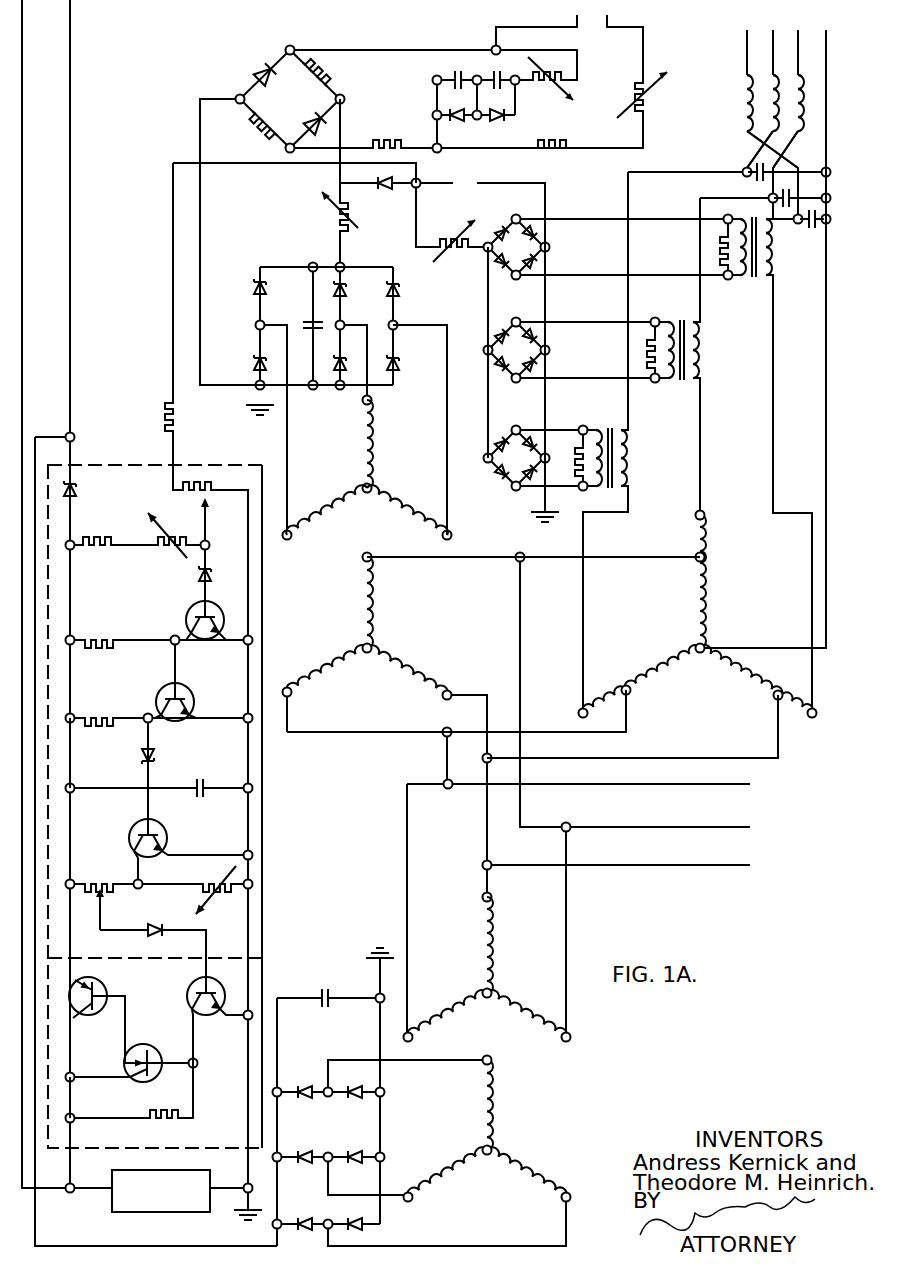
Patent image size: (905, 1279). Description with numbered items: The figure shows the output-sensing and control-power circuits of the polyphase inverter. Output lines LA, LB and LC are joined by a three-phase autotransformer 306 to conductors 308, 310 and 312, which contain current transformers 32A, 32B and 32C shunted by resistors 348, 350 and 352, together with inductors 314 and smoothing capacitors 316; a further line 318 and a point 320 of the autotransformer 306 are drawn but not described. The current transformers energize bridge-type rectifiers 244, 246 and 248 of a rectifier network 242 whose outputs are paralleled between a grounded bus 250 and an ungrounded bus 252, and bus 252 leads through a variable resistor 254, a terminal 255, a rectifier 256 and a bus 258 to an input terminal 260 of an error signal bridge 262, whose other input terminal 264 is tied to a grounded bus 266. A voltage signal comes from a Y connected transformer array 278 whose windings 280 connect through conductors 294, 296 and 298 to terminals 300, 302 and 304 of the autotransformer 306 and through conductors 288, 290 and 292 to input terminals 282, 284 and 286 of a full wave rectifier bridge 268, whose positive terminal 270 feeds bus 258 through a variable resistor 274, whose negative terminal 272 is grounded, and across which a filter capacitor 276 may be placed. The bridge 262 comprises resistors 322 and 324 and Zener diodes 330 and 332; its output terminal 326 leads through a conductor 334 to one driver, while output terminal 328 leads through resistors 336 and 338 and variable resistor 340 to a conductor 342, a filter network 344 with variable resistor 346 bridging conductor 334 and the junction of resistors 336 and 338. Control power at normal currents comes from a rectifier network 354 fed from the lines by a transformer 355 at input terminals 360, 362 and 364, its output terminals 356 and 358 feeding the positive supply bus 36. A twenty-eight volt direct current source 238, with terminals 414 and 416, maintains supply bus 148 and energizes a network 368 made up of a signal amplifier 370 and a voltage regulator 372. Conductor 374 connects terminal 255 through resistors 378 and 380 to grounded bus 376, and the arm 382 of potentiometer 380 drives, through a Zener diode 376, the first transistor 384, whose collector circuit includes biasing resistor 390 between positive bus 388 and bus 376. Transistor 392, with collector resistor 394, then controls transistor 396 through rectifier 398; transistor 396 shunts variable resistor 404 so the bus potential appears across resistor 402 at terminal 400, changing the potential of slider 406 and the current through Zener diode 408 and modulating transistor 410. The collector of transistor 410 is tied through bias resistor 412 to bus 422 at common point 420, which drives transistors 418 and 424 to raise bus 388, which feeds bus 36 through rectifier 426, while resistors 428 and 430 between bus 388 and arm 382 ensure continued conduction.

The potential supply bus 148 is at (44, 150).
The positive potential supply bus 36 is at (93, 150).
The error signal bridge 262 is at (307, 106).
The Zener diode 330 is at (276, 68).
The Zener diode 332 is at (330, 128).
The resistor 322 is at (313, 76).
The resistor 324 is at (256, 127).
The output terminal 326 is at (290, 50).
The input terminal 264 is at (239, 97).
The output terminal 328 is at (285, 150).
The input terminal 260 is at (342, 98).
The bus 258 is at (342, 108).
The grounded bus 266 is at (200, 126).
The fixed resistor 336 is at (392, 142).
The conductor 334 is at (492, 50).
The filter network 344 is at (437, 81).
The variable resistor 346 is at (535, 103).
The fixed resistor 338 is at (548, 142).
The conductor 342 is at (642, 58).
The variable resistor 340 is at (648, 108).
The output conductor 308 is at (747, 43).
The output conductor 310 is at (773, 43).
The output conductor 312 is at (798, 43).
The neutral line 318 is at (826, 43).
The inductors 314 is at (752, 150).
The smoothing capacitors 316 is at (755, 180).
The terminal 255 is at (418, 182).
The rectifier 256 is at (385, 190).
The variable resistor 254 is at (437, 236).
The bridge-type rectifier 248 is at (522, 212).
The bridge-type rectifier 246 is at (522, 316).
The bridge-type rectifier 244 is at (506, 428).
The rectifier network 242 is at (591, 196).
The ungrounded bus 252 is at (486, 298).
The grounded bus 250 is at (548, 298).
The resistor 352 is at (713, 247).
The current transformer 32C is at (757, 288).
The resistor 350 is at (647, 322).
The current transformer 32B is at (688, 395).
The resistor 348 is at (583, 430).
The current transformer 32A is at (610, 493).
The full wave rectifier bridge 268 is at (292, 224).
The positive potential output terminal 270 is at (336, 262).
The variable resistor 274 is at (348, 235).
The input terminal 282 is at (257, 322).
The negative potential output terminal 272 is at (258, 382).
The filter capacitor 276 is at (310, 324).
The input terminal 284 is at (343, 322).
The input terminal 286 is at (396, 320).
The conductor 290 is at (373, 398).
The conductor 374 is at (173, 258).
The resistor 378 is at (163, 412).
The network 368 is at (133, 465).
The signal amplifier 370 is at (262, 838).
The voltage regulator 372 is at (262, 990).
The three-phase Y connected transformer array 278 is at (337, 564).
The conductor 288 is at (290, 468).
The conductor 292 is at (447, 465).
The secondary windings 280 is at (386, 640).
The conductor 296 is at (436, 566).
The conductor 294 is at (340, 738).
The conductor 298 is at (622, 761).
The three-phase autotransformer 306 is at (768, 599).
The terminal 302 is at (706, 557).
The neutral point 320 is at (704, 648).
The terminal 300 is at (624, 689).
The terminal 304 is at (773, 697).
The potentiometer 380 is at (189, 493).
The arm 382 is at (226, 536).
The rectifier 426 is at (78, 498).
The resistor 430 is at (117, 532).
The resistor 428 is at (180, 554).
The grounded bus 376 is at (191, 579).
The first transistor 384 is at (187, 612).
The biasing resistor 390 is at (110, 628).
The amplifying transistor 392 is at (165, 686).
The resistor 394 is at (95, 695).
The rectifier 398 is at (151, 752).
The positive potential bus 388 is at (72, 768).
The amplifying transistor 396 is at (168, 840).
The resistance 402 is at (95, 876).
The terminal 400 is at (142, 882).
The slider 406 is at (104, 905).
The variable resistor 404 is at (224, 900).
The Zener diode 408 is at (145, 933).
The transistor 424 is at (104, 990).
The modulating transistor 410 is at (187, 988).
The transistor 418 is at (155, 1048).
The common point 420 is at (196, 1070).
The positive potential bus 422 is at (73, 1101).
The bias resistor 412 is at (166, 1124).
The terminal 416 is at (245, 1182).
The terminal 414 is at (83, 1204).
The source of direct current energy 238 is at (169, 1216).
The positive output terminal 358 is at (270, 1228).
The negative output terminal 356 is at (378, 995).
The alternating current input terminal 362 is at (328, 1096).
The alternating current input terminal 360 is at (345, 1140).
The alternating current input terminal 364 is at (324, 1212).
The rectifier network 354 is at (352, 861).
The transformer 355 is at (531, 1059).
The output line LA is at (738, 790).
The output line LB is at (738, 821).
The output line LC is at (738, 852).